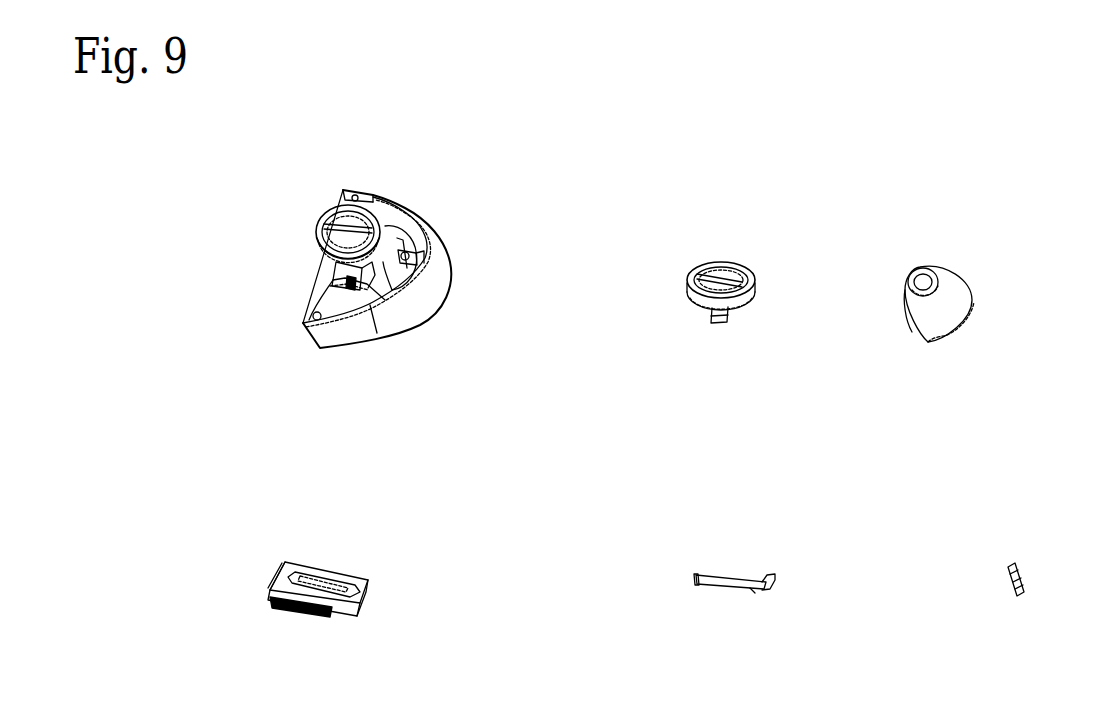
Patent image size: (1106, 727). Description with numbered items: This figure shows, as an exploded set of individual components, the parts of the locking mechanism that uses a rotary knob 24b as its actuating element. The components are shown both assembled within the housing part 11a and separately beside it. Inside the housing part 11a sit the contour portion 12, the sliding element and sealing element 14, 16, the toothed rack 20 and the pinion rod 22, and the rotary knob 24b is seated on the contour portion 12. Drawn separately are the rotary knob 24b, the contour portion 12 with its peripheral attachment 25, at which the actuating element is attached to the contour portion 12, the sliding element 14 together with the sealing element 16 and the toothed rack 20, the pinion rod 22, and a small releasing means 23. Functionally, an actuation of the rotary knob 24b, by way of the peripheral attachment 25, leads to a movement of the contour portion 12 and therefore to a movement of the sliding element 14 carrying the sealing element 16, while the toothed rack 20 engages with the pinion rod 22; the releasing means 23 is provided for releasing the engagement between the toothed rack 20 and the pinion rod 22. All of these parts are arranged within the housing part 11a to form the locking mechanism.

The housing part 11a is at (425, 293).
The contour portion 12 is at (397, 237).
The rotary knob 24b is at (345, 222).
The holder and cover 14, 16 is at (347, 263).
The sliding element 14 is at (357, 602).
The sealing element 16 is at (272, 578).
The toothed rack 20 is at (300, 610).
The pinion rod 22 is at (725, 580).
The releasing means 23 is at (1022, 582).
The peripheral attachment 25 is at (923, 277).